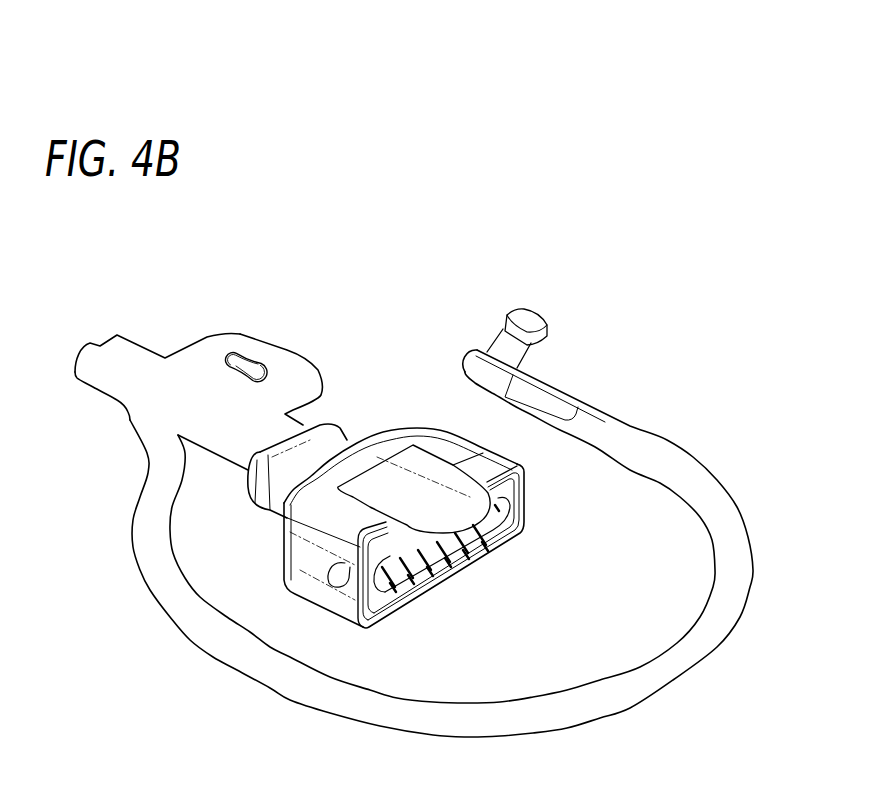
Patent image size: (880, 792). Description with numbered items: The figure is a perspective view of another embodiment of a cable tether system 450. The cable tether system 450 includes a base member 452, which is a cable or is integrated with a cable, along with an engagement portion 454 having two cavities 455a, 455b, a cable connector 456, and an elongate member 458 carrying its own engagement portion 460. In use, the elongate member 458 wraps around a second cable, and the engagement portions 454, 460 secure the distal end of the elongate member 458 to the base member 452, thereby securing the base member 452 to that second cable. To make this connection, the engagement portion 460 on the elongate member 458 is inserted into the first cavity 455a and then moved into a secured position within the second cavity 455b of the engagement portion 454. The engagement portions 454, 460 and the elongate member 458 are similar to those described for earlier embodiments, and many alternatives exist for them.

The cable tether system 450 is at (417, 147).
The base member 452 is at (138, 350).
The engagement portion 454 is at (297, 373).
The first cavity 455a is at (260, 377).
The second cavity 455b is at (235, 357).
The cable connector 456 is at (483, 460).
The elongate member 458 is at (200, 632).
The engagement portion 460 is at (543, 323).